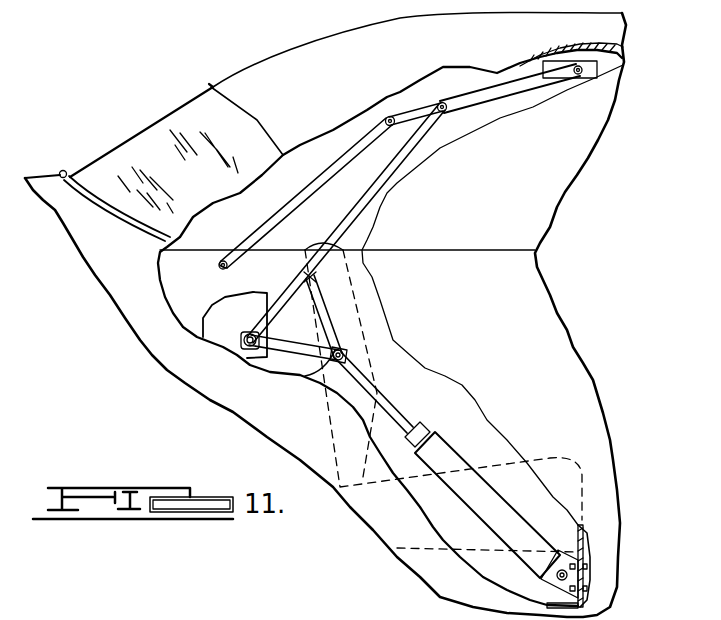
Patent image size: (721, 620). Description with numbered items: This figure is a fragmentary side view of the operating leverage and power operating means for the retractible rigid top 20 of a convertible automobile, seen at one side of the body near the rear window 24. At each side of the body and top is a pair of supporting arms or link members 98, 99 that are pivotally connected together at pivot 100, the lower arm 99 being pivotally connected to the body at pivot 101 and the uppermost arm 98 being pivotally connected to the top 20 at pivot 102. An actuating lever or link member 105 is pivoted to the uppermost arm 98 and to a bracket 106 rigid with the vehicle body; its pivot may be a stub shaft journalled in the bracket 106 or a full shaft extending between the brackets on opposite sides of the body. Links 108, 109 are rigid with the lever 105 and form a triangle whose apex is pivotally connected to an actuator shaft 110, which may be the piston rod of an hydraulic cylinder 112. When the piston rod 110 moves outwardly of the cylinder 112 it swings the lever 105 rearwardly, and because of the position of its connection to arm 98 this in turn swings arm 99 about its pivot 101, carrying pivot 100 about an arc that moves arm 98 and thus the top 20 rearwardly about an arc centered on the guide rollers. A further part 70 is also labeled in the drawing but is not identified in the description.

The retractible rigid roof or top 20 is at (383, 12).
The rear window 24 is at (117, 148).
The pivot pin 70 is at (244, 360).
The supporting arm 98 is at (493, 94).
The supporting arm 99 is at (350, 147).
The pivot 100 is at (390, 118).
The pivot 101 is at (223, 268).
The pivot 102 is at (623, 65).
The actuating lever 105 is at (383, 185).
The bracket 106 is at (215, 333).
The link 108 is at (260, 366).
The link 109 is at (330, 310).
The actuator shaft 110 is at (378, 392).
The hydraulic cylinder 112 is at (450, 457).